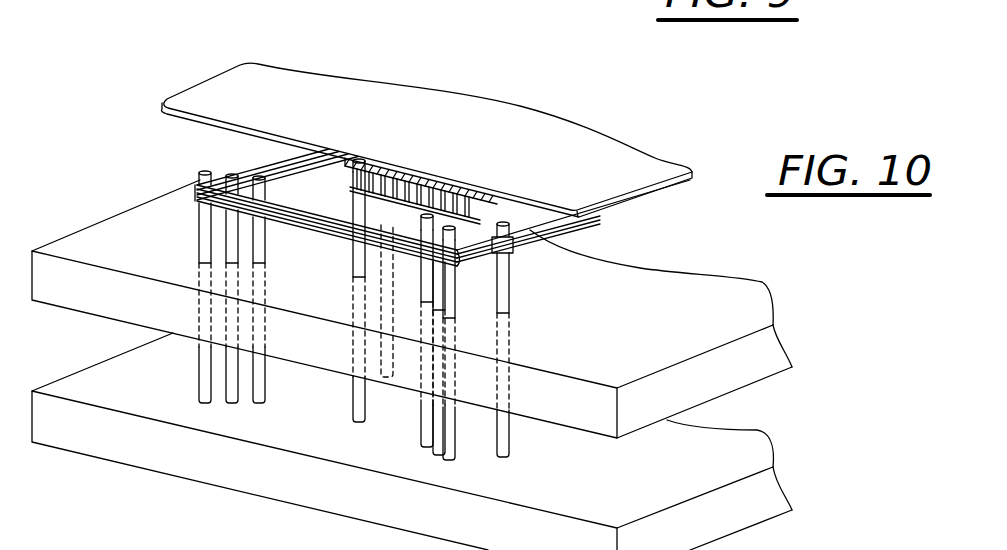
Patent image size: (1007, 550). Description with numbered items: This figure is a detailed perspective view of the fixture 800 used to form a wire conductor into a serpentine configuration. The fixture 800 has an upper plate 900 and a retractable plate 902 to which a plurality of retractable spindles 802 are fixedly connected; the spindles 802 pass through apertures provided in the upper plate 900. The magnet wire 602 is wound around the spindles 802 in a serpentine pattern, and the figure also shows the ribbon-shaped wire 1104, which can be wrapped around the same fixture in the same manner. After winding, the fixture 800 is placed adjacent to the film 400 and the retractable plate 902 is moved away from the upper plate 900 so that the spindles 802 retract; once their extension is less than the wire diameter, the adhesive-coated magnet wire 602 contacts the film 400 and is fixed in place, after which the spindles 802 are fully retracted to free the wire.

The film 400 is at (252, 88).
The magnet wire 602 is at (652, 205).
The fixture 800 is at (462, 335).
The retractable spindles 802 is at (199, 243).
The upper plate 900 is at (783, 357).
The retractable plate 902 is at (762, 488).
The ribbon-shaped wire 1104 is at (253, 163).